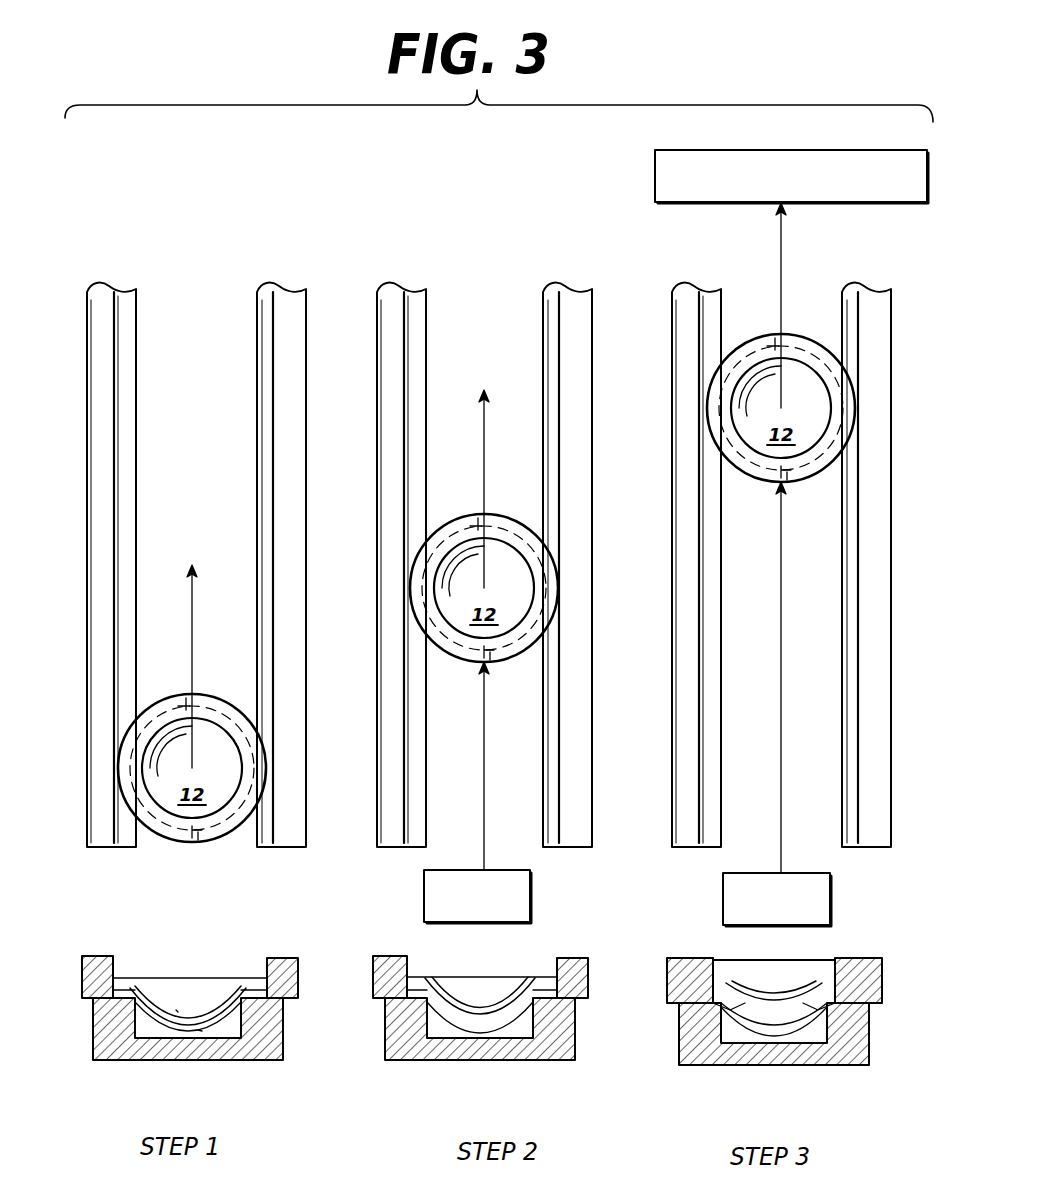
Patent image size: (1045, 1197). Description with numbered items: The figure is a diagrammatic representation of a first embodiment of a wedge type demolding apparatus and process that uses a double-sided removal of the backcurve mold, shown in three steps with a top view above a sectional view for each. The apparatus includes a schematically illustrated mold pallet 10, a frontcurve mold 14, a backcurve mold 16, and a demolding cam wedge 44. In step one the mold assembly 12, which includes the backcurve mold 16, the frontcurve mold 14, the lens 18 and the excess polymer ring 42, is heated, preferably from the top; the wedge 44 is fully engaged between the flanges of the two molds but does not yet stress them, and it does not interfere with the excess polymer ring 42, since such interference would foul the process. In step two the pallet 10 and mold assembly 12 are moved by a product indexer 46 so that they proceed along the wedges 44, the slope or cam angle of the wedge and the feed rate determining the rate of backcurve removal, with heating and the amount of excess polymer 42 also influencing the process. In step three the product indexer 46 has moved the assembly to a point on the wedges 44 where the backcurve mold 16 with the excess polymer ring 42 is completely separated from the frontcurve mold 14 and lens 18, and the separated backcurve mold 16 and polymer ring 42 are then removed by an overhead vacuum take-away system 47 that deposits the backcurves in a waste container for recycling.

The mold pallet 10 is at (265, 1061).
The mold assembly 12 is at (167, 996).
The frontcurve mold 14 is at (177, 1023).
The backcurve mold 16 is at (176, 1010).
The lens 18 is at (200, 1030).
The excess polymer ring 42 is at (108, 990).
The demolding cam wedge 44 is at (252, 988).
The product indexer 46 is at (530, 897).
The vacuum take-away system 47 is at (655, 172).